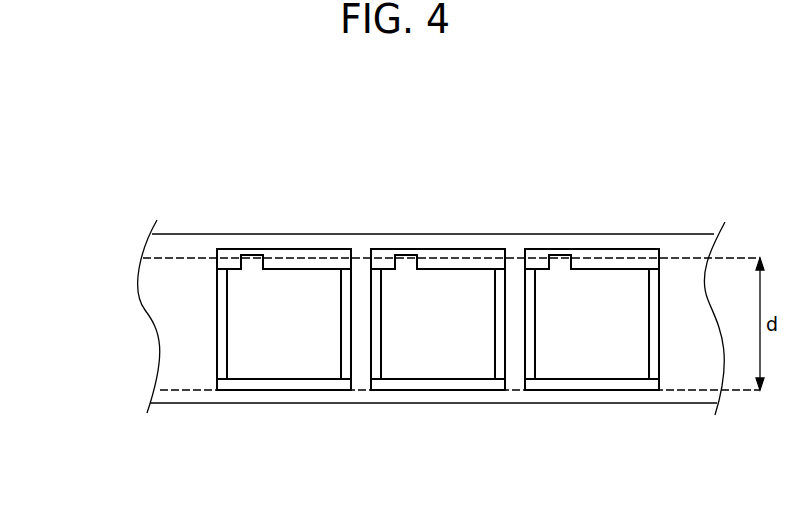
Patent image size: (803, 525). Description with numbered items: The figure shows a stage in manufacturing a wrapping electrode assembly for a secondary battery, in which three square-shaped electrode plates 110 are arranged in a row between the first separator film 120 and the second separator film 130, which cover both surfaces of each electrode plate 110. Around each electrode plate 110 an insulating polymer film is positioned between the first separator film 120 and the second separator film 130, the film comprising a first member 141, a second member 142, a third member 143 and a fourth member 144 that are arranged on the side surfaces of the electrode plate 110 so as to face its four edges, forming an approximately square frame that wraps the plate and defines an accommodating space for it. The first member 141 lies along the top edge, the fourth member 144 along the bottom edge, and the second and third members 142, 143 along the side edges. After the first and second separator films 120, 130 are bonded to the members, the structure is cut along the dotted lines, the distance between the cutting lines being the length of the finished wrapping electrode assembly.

The electrode plate 110 is at (300, 363).
The first separator film 120 is at (383, 317).
The second separator film 130 is at (152, 303).
The first member 141 is at (312, 252).
The second member 142 is at (222, 292).
The third member 143 is at (356, 258).
The fourth member 144 is at (243, 385).